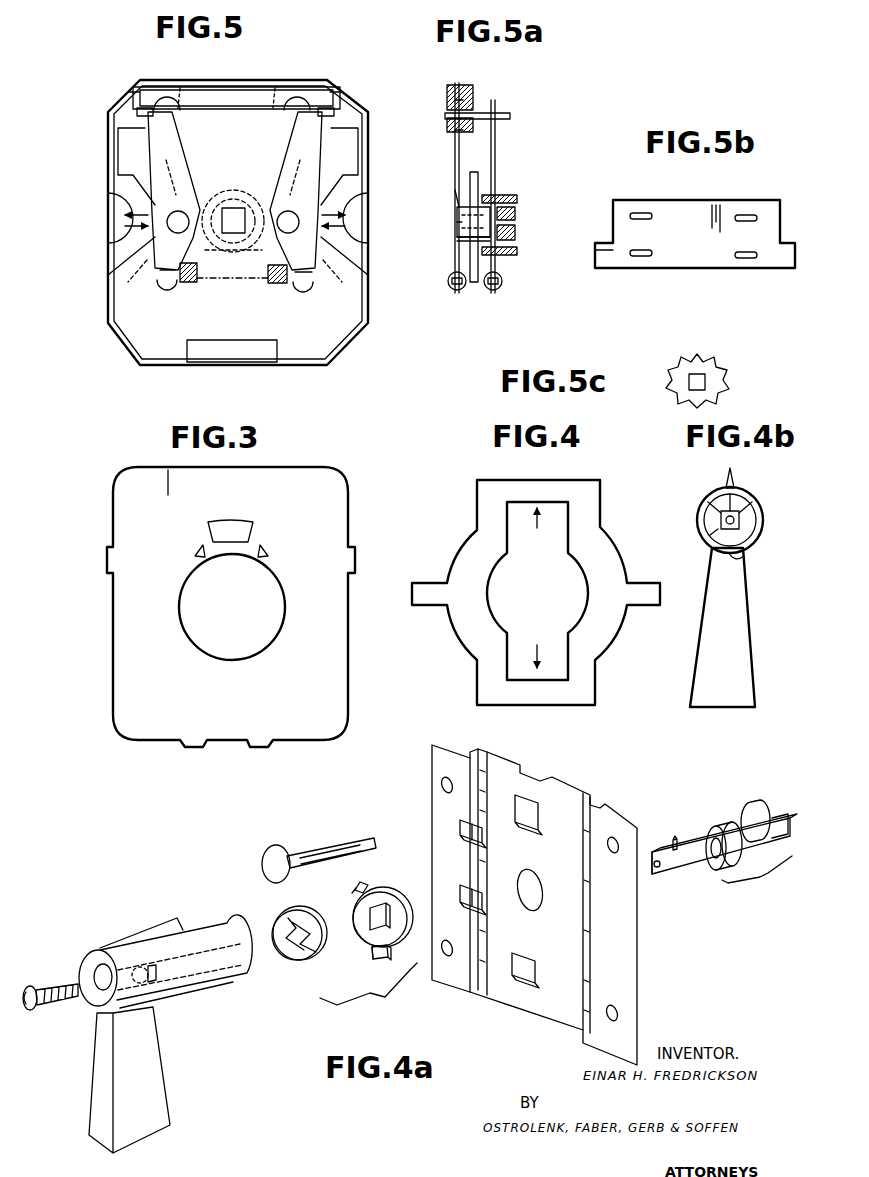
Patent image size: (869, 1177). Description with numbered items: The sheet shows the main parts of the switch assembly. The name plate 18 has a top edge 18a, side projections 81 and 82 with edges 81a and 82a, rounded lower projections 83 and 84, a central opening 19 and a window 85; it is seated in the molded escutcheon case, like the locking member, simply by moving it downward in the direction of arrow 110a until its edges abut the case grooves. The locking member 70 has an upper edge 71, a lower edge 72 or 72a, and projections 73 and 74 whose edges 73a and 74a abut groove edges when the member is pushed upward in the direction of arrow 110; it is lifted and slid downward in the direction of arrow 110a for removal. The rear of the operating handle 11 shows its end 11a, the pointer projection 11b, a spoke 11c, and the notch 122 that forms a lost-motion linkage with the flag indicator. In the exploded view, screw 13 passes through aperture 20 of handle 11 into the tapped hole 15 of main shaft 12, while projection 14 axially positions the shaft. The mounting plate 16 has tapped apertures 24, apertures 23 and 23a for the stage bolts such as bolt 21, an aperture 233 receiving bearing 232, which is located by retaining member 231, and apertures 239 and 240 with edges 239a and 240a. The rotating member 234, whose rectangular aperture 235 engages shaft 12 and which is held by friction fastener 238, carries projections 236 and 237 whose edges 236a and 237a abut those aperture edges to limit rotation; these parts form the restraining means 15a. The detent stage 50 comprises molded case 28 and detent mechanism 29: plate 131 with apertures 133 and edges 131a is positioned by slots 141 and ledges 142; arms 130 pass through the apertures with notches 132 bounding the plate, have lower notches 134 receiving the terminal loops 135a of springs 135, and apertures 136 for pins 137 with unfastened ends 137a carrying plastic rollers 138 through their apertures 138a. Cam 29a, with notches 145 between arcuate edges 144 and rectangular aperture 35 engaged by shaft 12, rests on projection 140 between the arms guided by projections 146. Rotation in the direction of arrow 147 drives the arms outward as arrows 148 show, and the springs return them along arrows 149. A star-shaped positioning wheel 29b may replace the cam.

In FIG. 4B, the operating handle 11 is at (747, 657).
In FIG. 4A, the operating handle 11 is at (201, 910).
In FIG. 4B, the end of operating handle 11a is at (721, 520).
In FIG. 4B, the projection on operating handle 11b is at (729, 482).
In FIG. 4A, the projection on operating handle 11b is at (140, 932).
In FIG. 4B, the spoke of handle hub 11c is at (716, 500).
In FIG. 4A, the main shaft 12 is at (786, 818).
In FIG. 4A, the screw 13 is at (30, 988).
In FIG. 4A, the projection on shaft 14 is at (675, 838).
In FIG. 4A, the tapped hole 15 is at (658, 872).
In FIG. 4A, the restraining means 15a is at (556, 940).
In FIG. 4A, the mounting plate 16 is at (445, 765).
In FIG. 3, the name plate 18 is at (318, 480).
In FIG. 3, the top edge of name plate 18a is at (212, 470).
In FIG. 3, the central opening 19 is at (276, 615).
In FIG. 4A, the aperture of operating handle 20 is at (95, 975).
In FIG. 4A, the bolt 21 is at (332, 848).
In FIG. 4A, the aperture 23 is at (530, 800).
In FIG. 4A, the aperture 23a is at (515, 977).
In FIG. 4A, the apertures of mounting plate 24 is at (442, 787).
In FIG. 5, the molded case 28 is at (120, 341).
In FIG. 5, the detent mechanism 29 is at (215, 292).
In FIG. 5, the cam member 29a is at (222, 190).
In FIG. 5A, the cam member 29a is at (470, 180).
In FIG. 5C, the cam member 29b is at (677, 380).
In FIG. 5, the rectangular aperture 35 is at (233, 236).
In FIG. 5, the detent stage 50 is at (100, 280).
In FIG. 4, the locking member 70 is at (615, 520).
In FIG. 4, the upper edge of locking member 71 is at (553, 480).
In FIG. 4, the lower edge of locking member 72 is at (565, 705).
In FIG. 4, the lower edge of locking member 72a is at (512, 680).
In FIG. 4, the projection of locking member 73 is at (412, 600).
In FIG. 4, the edge of projection 73 73a is at (430, 580).
In FIG. 4, the projection of locking member 74 is at (660, 598).
In FIG. 4, the edge of projection 74 74a is at (638, 583).
In FIG. 3, the projection on name plate 81 is at (107, 553).
In FIG. 3, the edge of projection 81 81a is at (110, 572).
In FIG. 3, the projection on name plate 82 is at (352, 548).
In FIG. 3, the edge of projection 82 82a is at (352, 574).
In FIG. 3, the rounded projection of name plate 83 is at (265, 747).
In FIG. 3, the rounded projection of name plate 84 is at (190, 747).
In FIG. 3, the window in name plate 85 is at (237, 525).
In FIG. 4, the arrow 110 is at (537, 532).
In FIG. 4, the arrow 110a is at (535, 647).
In FIG. 4B, the notch of operating handle 122 is at (742, 560).
In FIG. 5, the arm 130 is at (178, 131).
In FIG. 5A, the arm 130 is at (455, 130).
In FIG. 5, the plate 131 is at (236, 101).
In FIG. 5A, the plate 131 is at (510, 114).
In FIG. 5B, the plate 131 is at (695, 208).
In FIG. 5B, the edges of plate 131a is at (600, 243).
In FIG. 5, the notch in arm 132 is at (167, 88).
In FIG. 5, the apertures of plate 133 is at (183, 88).
In FIG. 5B, the apertures of plate 133 is at (642, 213).
In FIG. 5, the notch at lower end of arm 134 is at (162, 287).
In FIG. 5, the spring 135 is at (265, 284).
In FIG. 5A, the spring 135 is at (448, 283).
In FIG. 5, the terminal loop of spring 135a is at (173, 284).
In FIG. 5A, the aperture in arm 136 is at (457, 240).
In FIG. 5, the pin 137 is at (170, 213).
In FIG. 5A, the pin 137 is at (457, 222).
In FIG. 5A, the ends of pin 137a is at (515, 233).
In FIG. 5, the plastic roller 138 is at (232, 277).
In FIG. 5A, the plastic roller 138 is at (455, 195).
In FIG. 5A, the aperture of roller 138a is at (457, 212).
In FIG. 5, the cylindrical molded projection 140 is at (237, 200).
In FIG. 5A, the cylindrical molded projection 140 is at (505, 195).
In FIG. 5, the slots in molded case 141 is at (138, 95).
In FIG. 5A, the slots in molded case 141 is at (447, 100).
In FIG. 5A, the ledges in slots 142 is at (473, 108).
In FIG. 5, the arcuate edges of cam 144 is at (210, 200).
In FIG. 5, the notches of cam 145 is at (233, 264).
In FIG. 5A, the molded projections 146 is at (515, 212).
In FIG. 5, the arrow 147 is at (240, 205).
In FIG. 5, the arrows 148 is at (108, 200).
In FIG. 5, the arrows 149 is at (122, 228).
In FIG. 4A, the retaining member 231 is at (754, 804).
In FIG. 4A, the bearing 232 is at (714, 825).
In FIG. 4A, the aperture 233 is at (532, 882).
In FIG. 4A, the rotating member 234 is at (385, 890).
In FIG. 4A, the rectangular aperture 235 is at (370, 915).
In FIG. 4A, the projection of rotating member 236 is at (357, 884).
In FIG. 4A, the edge of projection 236 236a is at (352, 893).
In FIG. 4A, the projection of rotating member 237 is at (380, 958).
In FIG. 4A, the edge of projection 237 237a is at (372, 950).
In FIG. 4A, the friction fastener 238 is at (300, 907).
In FIG. 4A, the aperture 239 is at (460, 828).
In FIG. 4A, the edge of aperture 239 239a is at (476, 838).
In FIG. 4A, the aperture 240 is at (462, 898).
In FIG. 4A, the edge of aperture 240 240a is at (478, 905).